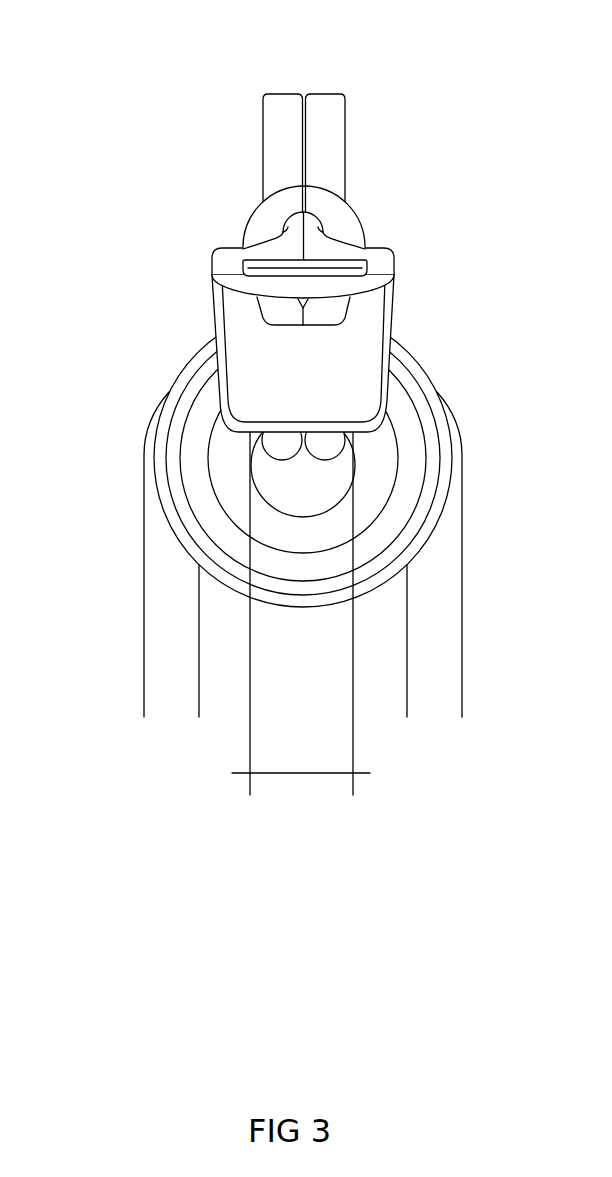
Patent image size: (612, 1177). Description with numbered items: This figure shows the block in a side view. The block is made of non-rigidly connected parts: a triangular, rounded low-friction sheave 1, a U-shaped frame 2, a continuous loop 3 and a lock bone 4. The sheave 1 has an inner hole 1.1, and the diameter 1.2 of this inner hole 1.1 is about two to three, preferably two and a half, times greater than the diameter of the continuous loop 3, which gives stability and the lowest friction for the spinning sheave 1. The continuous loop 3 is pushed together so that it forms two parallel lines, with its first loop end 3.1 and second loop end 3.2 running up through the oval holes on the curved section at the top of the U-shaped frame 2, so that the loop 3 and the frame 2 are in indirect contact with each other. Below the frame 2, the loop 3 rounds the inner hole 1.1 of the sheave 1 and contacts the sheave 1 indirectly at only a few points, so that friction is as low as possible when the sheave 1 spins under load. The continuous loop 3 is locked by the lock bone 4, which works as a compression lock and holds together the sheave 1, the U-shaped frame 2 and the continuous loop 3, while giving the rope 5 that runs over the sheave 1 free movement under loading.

The low-friction sheave 1 is at (202, 490).
The inner hole 1.1 is at (282, 483).
The diameter 1.2 is at (301, 619).
The U-shaped frame 2 is at (287, 378).
The continuous loop 3 is at (325, 127).
The first loop end 3.1 is at (305, 197).
The second loop end 3.2 is at (293, 287).
The lock bone 4 is at (310, 263).
The rope 5 is at (175, 634).